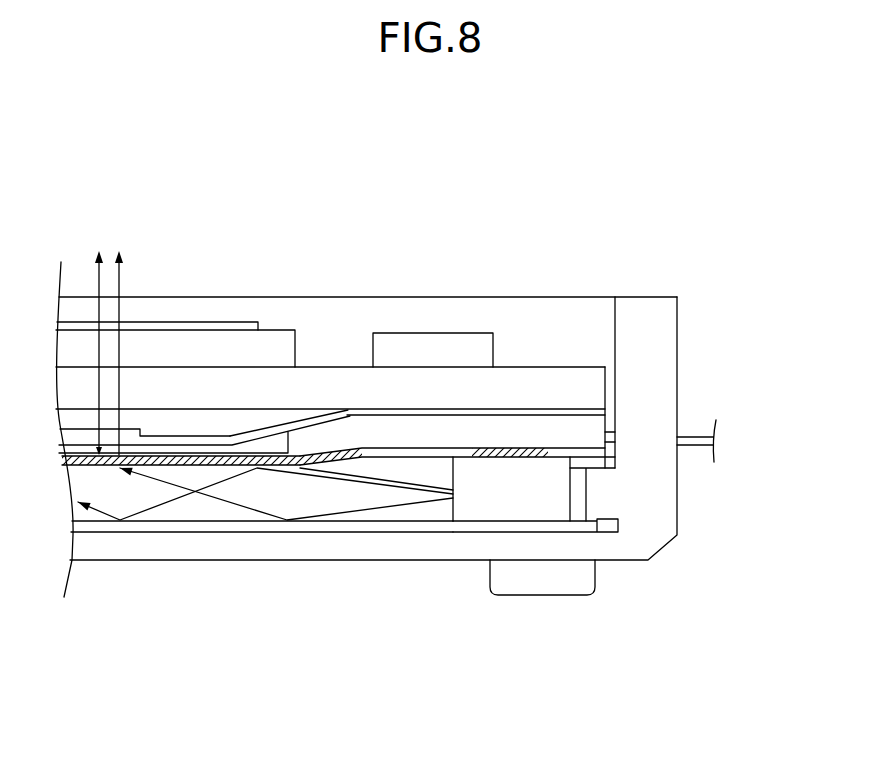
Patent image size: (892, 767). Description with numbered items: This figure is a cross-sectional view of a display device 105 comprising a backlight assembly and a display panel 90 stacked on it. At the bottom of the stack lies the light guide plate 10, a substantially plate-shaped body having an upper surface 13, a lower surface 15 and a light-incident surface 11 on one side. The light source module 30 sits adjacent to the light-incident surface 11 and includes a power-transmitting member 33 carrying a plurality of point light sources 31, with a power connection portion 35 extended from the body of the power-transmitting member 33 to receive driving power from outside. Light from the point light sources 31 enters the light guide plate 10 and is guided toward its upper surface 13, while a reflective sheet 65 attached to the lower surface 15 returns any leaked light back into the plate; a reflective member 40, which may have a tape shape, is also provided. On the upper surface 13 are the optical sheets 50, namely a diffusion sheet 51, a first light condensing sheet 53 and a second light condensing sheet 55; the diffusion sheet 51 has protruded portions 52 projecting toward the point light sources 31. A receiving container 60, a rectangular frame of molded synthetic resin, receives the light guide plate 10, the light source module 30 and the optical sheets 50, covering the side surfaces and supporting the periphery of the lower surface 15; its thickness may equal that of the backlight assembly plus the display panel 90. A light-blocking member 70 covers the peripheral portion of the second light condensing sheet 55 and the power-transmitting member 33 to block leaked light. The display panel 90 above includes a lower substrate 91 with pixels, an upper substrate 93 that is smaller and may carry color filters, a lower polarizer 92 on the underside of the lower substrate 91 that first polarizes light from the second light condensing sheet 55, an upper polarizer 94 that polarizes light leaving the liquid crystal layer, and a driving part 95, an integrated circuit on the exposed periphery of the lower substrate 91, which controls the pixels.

The display device 105 is at (362, 114).
The display panel 90 is at (123, 220).
The lower polarizer 92 is at (142, 417).
The upper polarizer 94 is at (185, 327).
The upper substrate 93 is at (237, 347).
The lower substrate 91 is at (282, 388).
The driving part 95 is at (390, 345).
The protruded portion 52 is at (352, 452).
The light-blocking member 70 is at (518, 413).
The light source module 30 is at (757, 337).
The power-transmitting member 33 is at (543, 423).
The point light source 31 is at (550, 448).
The power connection portion 35 is at (686, 437).
The reflective member 40 is at (597, 453).
The receiving container 60 is at (660, 510).
The optical sheets 50 is at (223, 637).
The second light condensing sheet 55 is at (100, 456).
The first light condensing sheet 53 is at (165, 450).
The diffusion sheet 51 is at (214, 462).
The reflective sheet 65 is at (263, 525).
The light guide plate 10 is at (432, 637).
The lower surface 15 is at (326, 525).
The upper surface 13 is at (373, 458).
The light-incident surface 11 is at (433, 512).